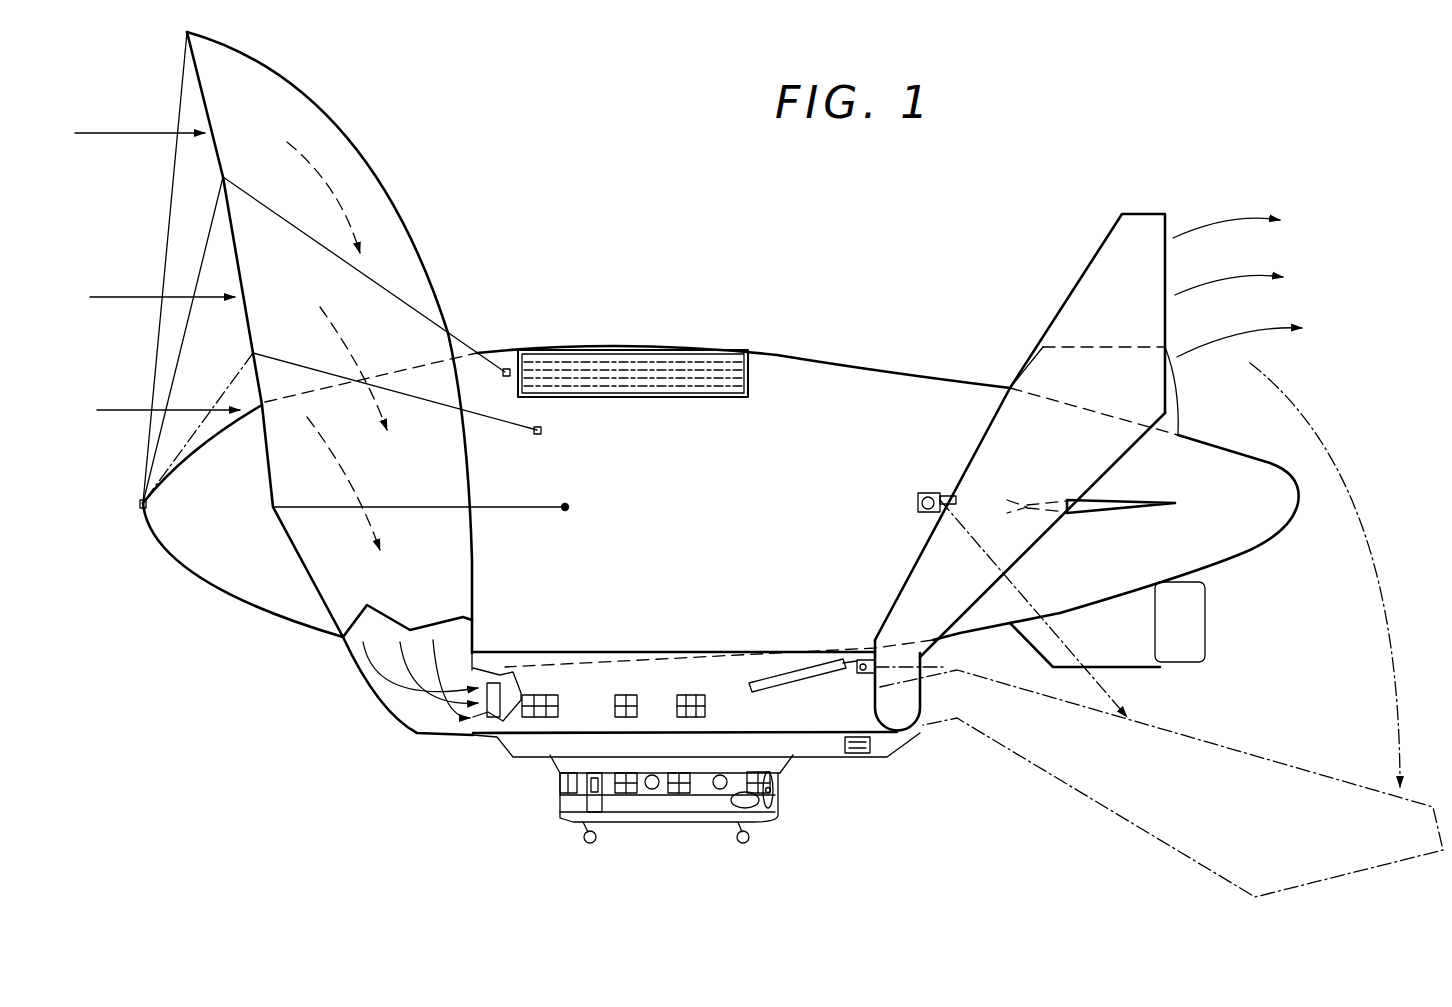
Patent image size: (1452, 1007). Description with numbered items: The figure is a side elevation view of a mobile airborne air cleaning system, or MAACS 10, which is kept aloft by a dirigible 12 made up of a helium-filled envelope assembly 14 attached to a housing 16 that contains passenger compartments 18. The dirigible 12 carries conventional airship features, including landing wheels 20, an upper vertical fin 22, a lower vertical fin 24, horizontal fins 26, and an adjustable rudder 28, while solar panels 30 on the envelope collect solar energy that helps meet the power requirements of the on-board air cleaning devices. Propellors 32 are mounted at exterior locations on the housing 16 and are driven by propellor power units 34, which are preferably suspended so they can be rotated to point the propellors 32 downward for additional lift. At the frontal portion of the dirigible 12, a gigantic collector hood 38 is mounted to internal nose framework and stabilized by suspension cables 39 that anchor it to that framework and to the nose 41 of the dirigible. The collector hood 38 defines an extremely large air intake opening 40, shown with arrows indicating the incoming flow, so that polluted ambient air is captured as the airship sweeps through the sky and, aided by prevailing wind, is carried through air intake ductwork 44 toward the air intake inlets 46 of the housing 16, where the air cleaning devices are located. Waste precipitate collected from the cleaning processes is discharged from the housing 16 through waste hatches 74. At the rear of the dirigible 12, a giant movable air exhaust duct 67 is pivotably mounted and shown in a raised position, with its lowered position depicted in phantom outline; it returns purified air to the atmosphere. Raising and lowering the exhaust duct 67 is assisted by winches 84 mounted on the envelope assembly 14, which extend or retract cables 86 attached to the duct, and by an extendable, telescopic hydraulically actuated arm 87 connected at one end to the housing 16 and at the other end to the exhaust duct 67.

The mobile airborne air cleaning system (MAACS) 10 is at (785, 325).
The dirigible 12 is at (255, 603).
The envelope assembly 14 is at (885, 395).
The housing 16 is at (537, 725).
The passenger compartments 18 is at (672, 808).
The landing wheels 20 is at (583, 835).
The upper vertical fin 22 is at (1165, 420).
The lower vertical fin 24 is at (1125, 655).
The horizontal fins 26 is at (1125, 505).
The adjustable rudder 28 is at (1195, 625).
The solar panels 30 is at (615, 370).
The propellors 32 is at (783, 790).
The propellor power units 34 is at (750, 810).
The collector hood 38 is at (352, 140).
The suspension cables 39 is at (480, 340).
The air intake opening 40 is at (235, 315).
The nose 41 is at (141, 510).
The air intake ductwork 44 is at (395, 722).
The air intake inlets 46 is at (480, 712).
The movable air exhaust ducts 67 is at (1105, 240).
The waste hatches 74 is at (870, 757).
The winches 84 is at (917, 495).
The cables 86 is at (937, 493).
The hydraulically actuated arms 87 is at (812, 660).